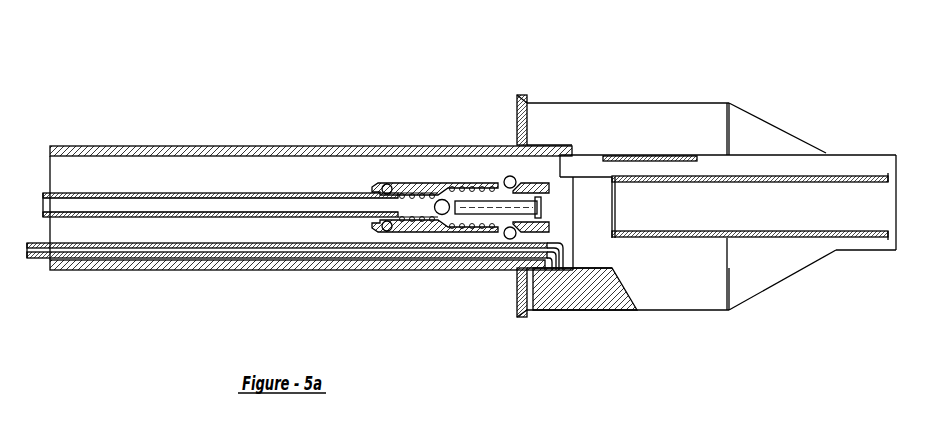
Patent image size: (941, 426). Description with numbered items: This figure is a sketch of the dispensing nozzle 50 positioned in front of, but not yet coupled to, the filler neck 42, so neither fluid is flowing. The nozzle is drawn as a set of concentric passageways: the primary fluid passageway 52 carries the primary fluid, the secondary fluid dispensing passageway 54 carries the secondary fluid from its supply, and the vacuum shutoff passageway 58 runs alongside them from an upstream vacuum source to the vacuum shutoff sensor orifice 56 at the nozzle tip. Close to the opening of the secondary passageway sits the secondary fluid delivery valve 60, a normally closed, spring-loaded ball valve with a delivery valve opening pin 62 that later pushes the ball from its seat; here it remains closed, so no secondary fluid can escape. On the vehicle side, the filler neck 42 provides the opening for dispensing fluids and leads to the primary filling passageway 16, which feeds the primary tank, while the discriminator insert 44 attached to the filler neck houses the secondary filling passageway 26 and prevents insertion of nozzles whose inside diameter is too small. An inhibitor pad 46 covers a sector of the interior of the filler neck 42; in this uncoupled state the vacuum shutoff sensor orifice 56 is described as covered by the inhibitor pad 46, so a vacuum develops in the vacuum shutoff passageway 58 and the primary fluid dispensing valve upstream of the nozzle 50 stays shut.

The primary filling passageway 16 is at (673, 260).
The secondary filling passageway 26 is at (770, 207).
The filler neck 42 is at (667, 103).
The discriminator insert 44 is at (800, 165).
The inhibitor pad 46 is at (597, 290).
The dispensing nozzle 50 is at (300, 146).
The primary fluid passageway 52 is at (252, 173).
The secondary fluid dispensing passageway 54 is at (186, 207).
The vacuum shutoff sensor orifice 56 is at (555, 268).
The vacuum shutoff passageway 58 is at (398, 247).
The secondary fluid delivery valve 60 is at (394, 182).
The delivery valve opening pin 62 is at (484, 205).